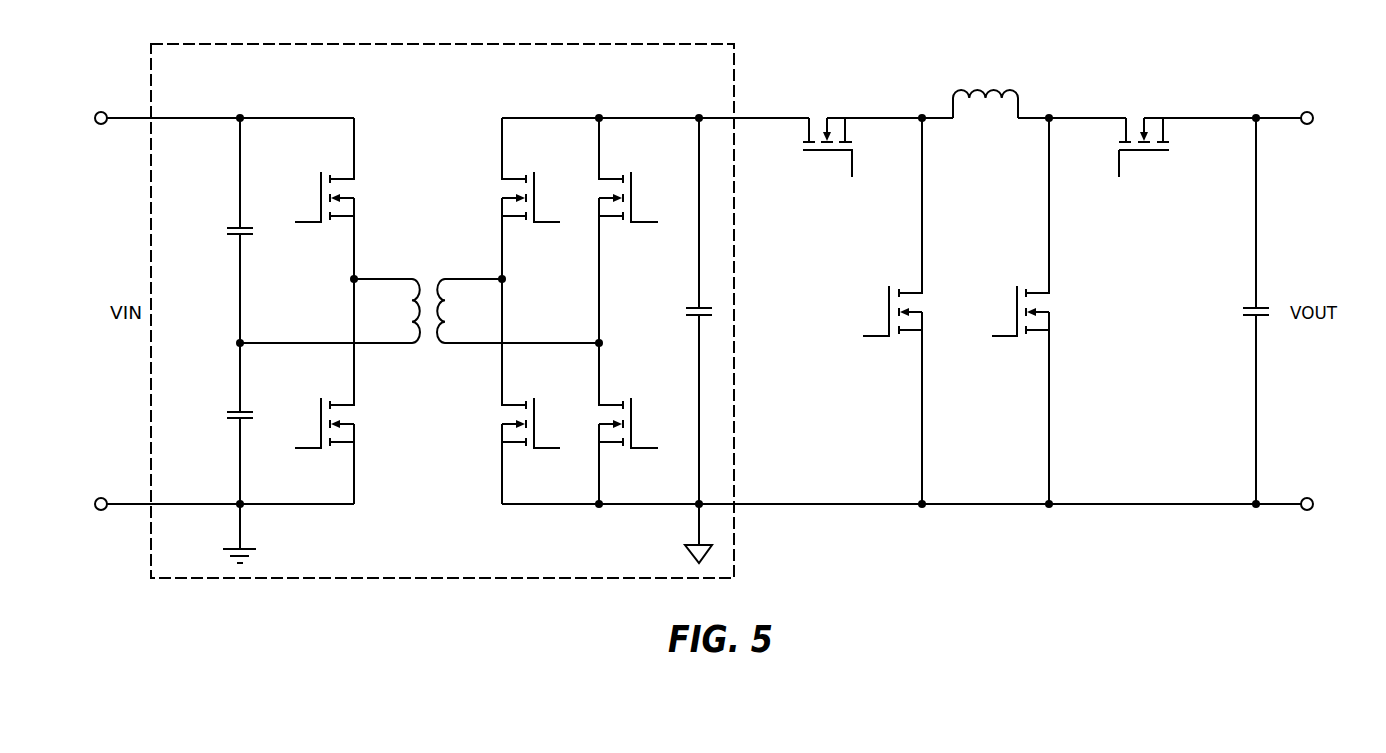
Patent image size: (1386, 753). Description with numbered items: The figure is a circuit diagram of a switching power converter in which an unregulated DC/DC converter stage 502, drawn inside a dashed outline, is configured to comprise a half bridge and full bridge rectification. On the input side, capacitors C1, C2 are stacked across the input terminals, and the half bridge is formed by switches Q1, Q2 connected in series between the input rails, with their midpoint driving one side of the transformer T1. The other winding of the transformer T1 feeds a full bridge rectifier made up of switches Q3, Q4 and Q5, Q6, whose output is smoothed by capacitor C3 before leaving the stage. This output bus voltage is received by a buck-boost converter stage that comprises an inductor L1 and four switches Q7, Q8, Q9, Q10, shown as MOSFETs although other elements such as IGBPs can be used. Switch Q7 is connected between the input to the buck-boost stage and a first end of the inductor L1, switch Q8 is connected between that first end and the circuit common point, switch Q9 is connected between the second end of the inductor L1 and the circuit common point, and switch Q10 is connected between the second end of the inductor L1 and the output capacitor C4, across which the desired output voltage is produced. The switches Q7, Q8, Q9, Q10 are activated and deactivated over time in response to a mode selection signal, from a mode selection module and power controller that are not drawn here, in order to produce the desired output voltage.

The unregulated DC/DC converter stage 502 is at (660, 29).
The capacitor C1 is at (227, 230).
The capacitor C2 is at (227, 423).
The capacitor C3 is at (685, 311).
The capacitor C4 is at (1243, 311).
The switch Q1 is at (323, 198).
The switch Q2 is at (323, 391).
The switch Q3 is at (532, 198).
The switch Q4 is at (532, 391).
The switch Q5 is at (629, 230).
The switch Q6 is at (629, 423).
The switch Q7 is at (828, 148).
The switch Q8 is at (890, 311).
The switch Q9 is at (1017, 311).
The switch Q10 is at (1144, 148).
The transformer T1 is at (428, 297).
The inductor L1 is at (985, 90).